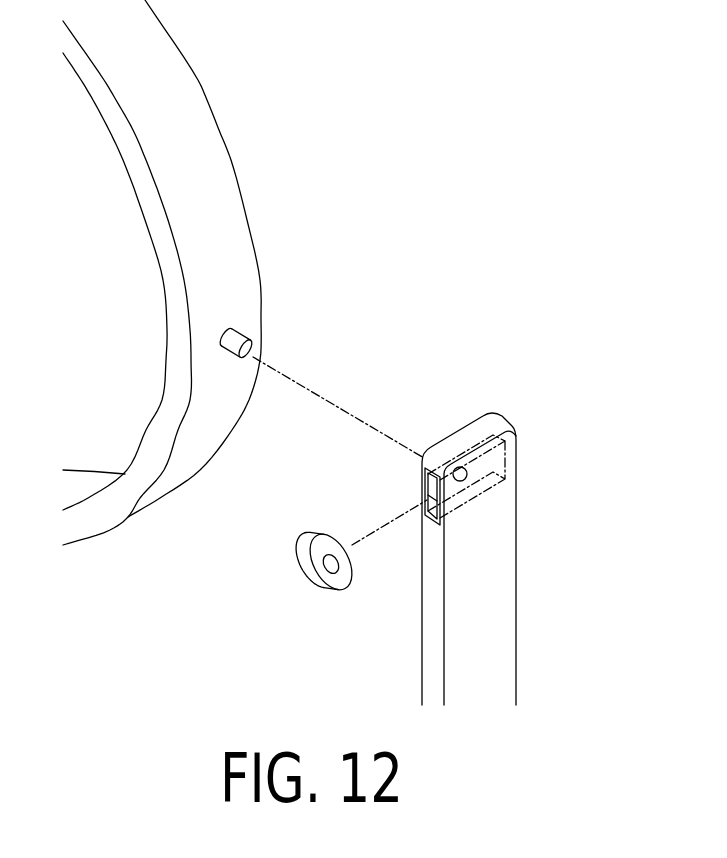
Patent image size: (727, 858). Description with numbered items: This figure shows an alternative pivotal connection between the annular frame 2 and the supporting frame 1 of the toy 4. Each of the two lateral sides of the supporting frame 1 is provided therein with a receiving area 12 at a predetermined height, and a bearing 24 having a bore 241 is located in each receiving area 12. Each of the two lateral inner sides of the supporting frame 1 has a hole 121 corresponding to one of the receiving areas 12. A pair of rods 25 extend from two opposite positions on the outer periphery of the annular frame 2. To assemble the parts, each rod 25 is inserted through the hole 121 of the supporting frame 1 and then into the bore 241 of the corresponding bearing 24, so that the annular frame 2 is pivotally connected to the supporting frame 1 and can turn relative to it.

The supporting frame 1 is at (482, 647).
The annular frame 2 is at (202, 160).
The toy 4 is at (422, 168).
The receiving area 12 is at (427, 488).
The hole 121 is at (460, 467).
The bearing 24 is at (327, 582).
The bore 241 is at (336, 566).
The rod 25 is at (236, 340).